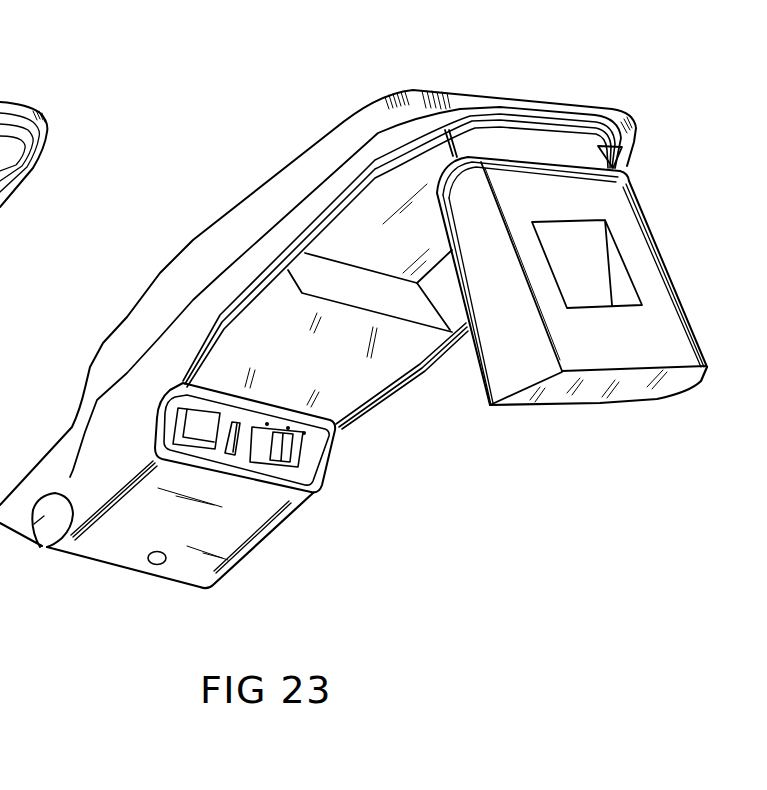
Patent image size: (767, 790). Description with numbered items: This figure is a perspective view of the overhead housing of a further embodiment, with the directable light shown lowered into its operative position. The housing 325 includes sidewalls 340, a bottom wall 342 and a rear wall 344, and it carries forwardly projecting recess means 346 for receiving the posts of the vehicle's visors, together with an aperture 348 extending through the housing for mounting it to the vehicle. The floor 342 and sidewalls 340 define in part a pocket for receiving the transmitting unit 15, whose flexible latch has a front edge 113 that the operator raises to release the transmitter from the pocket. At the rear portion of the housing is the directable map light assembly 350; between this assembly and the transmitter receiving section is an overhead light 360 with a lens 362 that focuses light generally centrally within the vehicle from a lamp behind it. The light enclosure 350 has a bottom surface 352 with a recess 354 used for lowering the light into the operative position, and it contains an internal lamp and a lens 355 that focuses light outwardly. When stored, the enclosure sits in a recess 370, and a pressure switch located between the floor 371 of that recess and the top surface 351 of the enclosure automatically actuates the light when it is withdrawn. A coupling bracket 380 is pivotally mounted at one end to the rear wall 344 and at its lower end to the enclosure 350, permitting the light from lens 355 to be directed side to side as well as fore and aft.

The sidewalls 340 is at (187, 273).
The rear wall 344 is at (543, 82).
The recess means 346 is at (42, 518).
The aperture 348 is at (153, 566).
The bottom wall 342 is at (180, 544).
The transmitter assembly 15 is at (310, 461).
The front edge 113 is at (316, 494).
The housing 325 is at (374, 407).
The overhead light 360 is at (392, 347).
The lens 362 is at (324, 369).
The floor of the recess 371 is at (399, 255).
The recess 370 is at (366, 218).
The directable map light assembly 350 is at (0, 214).
The top surface 351 is at (484, 392).
The bottom surface 352 is at (629, 342).
The recess 354 is at (559, 234).
The lens 355 is at (619, 389).
The coupling bracket 380 is at (587, 153).